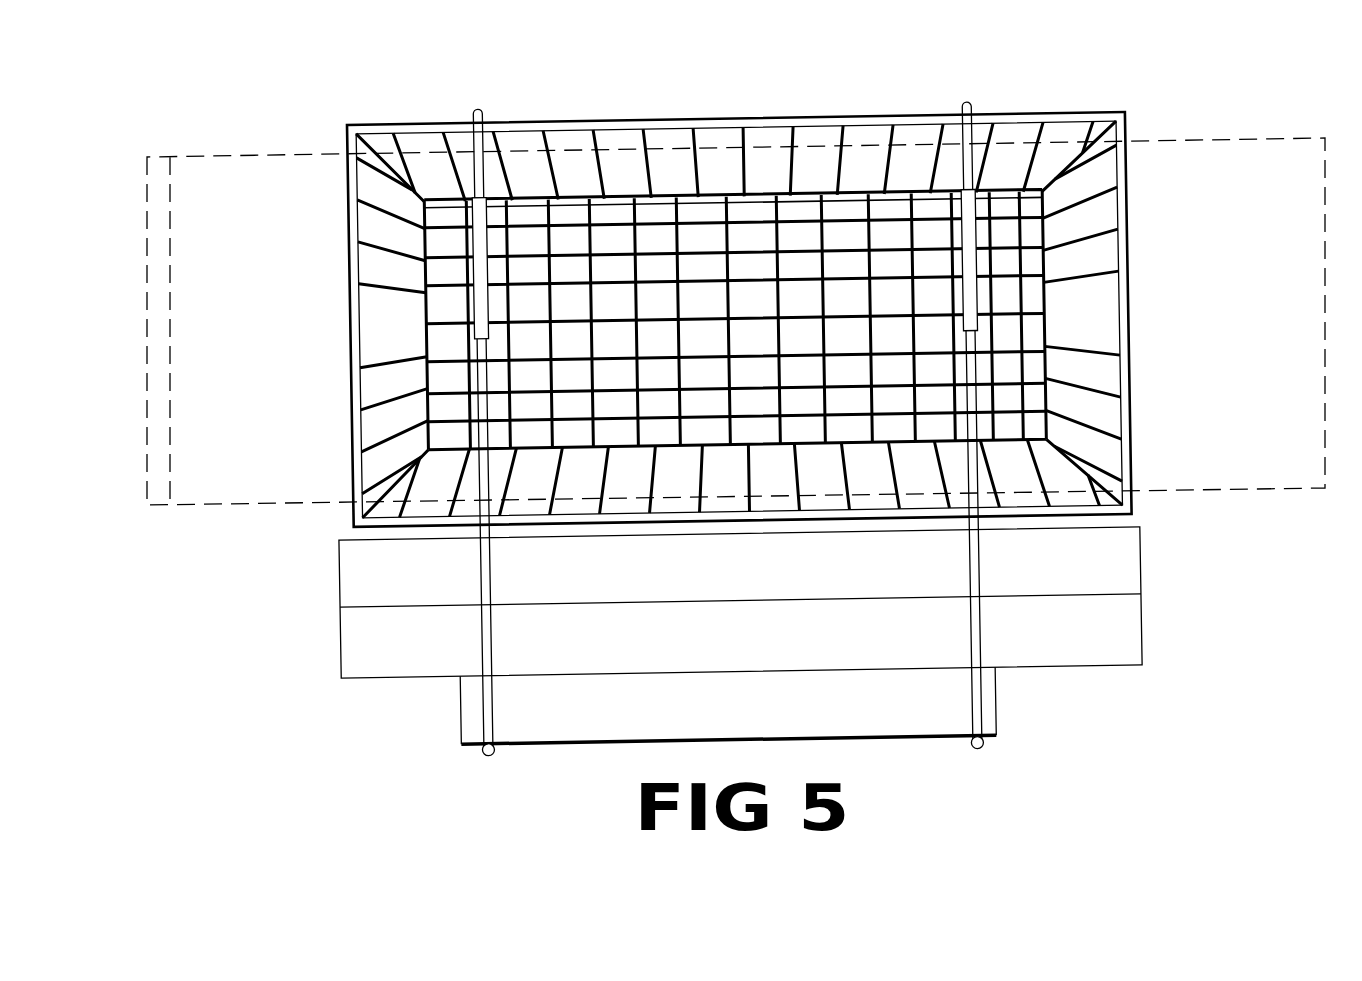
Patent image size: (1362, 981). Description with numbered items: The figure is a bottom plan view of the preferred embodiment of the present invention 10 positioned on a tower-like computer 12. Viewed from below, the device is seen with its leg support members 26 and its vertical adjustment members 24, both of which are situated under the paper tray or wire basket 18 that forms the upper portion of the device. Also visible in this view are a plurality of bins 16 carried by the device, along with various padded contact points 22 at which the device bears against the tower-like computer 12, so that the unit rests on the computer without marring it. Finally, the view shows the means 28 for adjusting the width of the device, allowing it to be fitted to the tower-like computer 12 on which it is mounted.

The present invention 10 is at (1186, 540).
The tower-like computer 12 is at (260, 485).
The bins 16 is at (562, 640).
The paper tray or wire basket 18 is at (1130, 302).
The padded contact points 22 is at (478, 147).
The vertical adjustment members 24 is at (480, 747).
The leg support members 26 is at (489, 758).
The means for adjusting the width 28 is at (480, 295).